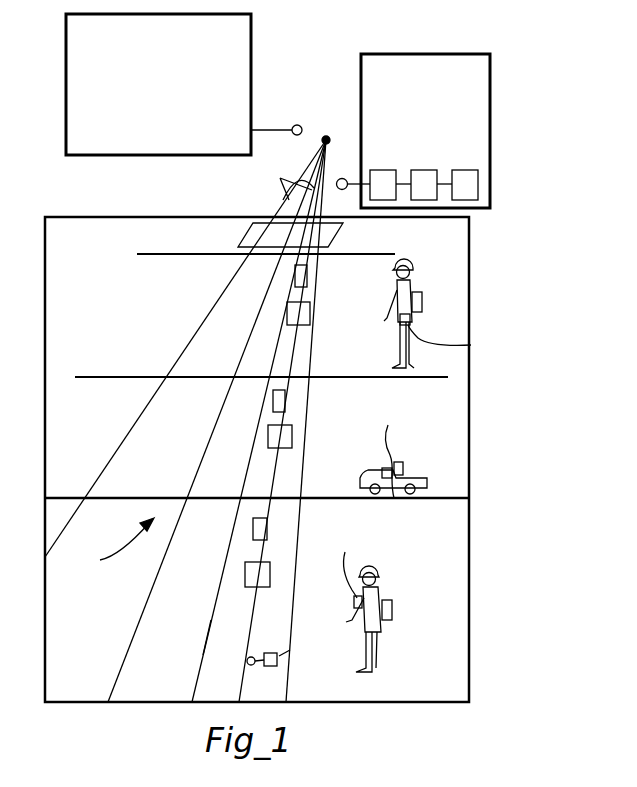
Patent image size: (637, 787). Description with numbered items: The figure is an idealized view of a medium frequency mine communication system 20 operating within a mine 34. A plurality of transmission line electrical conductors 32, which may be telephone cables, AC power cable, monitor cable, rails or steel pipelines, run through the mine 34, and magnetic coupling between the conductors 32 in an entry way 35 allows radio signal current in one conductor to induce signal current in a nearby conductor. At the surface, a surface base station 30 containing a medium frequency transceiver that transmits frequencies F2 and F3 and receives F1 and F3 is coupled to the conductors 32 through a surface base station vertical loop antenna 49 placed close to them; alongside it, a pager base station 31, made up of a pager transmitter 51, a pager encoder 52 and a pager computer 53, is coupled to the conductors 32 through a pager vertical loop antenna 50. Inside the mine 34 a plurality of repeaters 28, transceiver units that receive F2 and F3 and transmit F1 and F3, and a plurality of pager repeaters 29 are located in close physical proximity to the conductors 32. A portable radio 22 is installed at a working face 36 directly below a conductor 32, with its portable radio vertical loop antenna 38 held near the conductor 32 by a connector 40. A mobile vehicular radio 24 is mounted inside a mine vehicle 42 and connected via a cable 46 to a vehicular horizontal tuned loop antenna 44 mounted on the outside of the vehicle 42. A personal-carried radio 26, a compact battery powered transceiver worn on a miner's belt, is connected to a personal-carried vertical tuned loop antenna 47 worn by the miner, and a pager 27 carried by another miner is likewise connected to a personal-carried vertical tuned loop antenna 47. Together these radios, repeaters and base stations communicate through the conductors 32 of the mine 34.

The medium frequency mine communication system 20 is at (114, 556).
The portable radio 22 is at (268, 667).
The mobile vehicular radio 24 is at (382, 470).
The personal-carried radio 26 is at (410, 322).
The pager 27 is at (354, 600).
The repeaters 28 is at (310, 314).
The pager repeaters 29 is at (307, 276).
The surface base station 30 is at (66, 72).
The pager base station 31 is at (492, 176).
The transmission line electrical conductors 32 is at (281, 179).
The mine 34 is at (470, 318).
The entry way 35 is at (245, 231).
The working face 36 is at (207, 630).
The portable radio vertical loop antenna 38 is at (267, 637).
The connector 40 is at (247, 662).
The mine vehicle 42 is at (428, 476).
The vehicular horizontal tuned loop antenna 44 is at (414, 458).
The cable 46 is at (380, 451).
The personal-carried vertical tuned loop antenna 47 is at (422, 300).
The surface base station vertical loop antenna 49 is at (281, 117).
The pager vertical loop antenna 50 is at (338, 181).
The pager transmitter 51 is at (384, 200).
The pager encoder 52 is at (425, 200).
The pager computer 53 is at (468, 200).